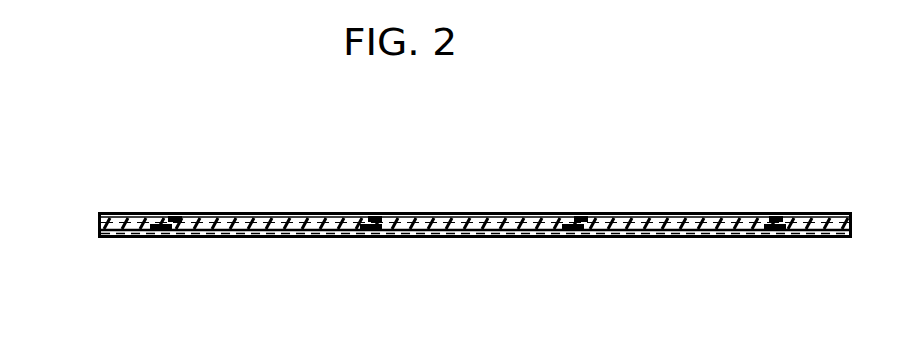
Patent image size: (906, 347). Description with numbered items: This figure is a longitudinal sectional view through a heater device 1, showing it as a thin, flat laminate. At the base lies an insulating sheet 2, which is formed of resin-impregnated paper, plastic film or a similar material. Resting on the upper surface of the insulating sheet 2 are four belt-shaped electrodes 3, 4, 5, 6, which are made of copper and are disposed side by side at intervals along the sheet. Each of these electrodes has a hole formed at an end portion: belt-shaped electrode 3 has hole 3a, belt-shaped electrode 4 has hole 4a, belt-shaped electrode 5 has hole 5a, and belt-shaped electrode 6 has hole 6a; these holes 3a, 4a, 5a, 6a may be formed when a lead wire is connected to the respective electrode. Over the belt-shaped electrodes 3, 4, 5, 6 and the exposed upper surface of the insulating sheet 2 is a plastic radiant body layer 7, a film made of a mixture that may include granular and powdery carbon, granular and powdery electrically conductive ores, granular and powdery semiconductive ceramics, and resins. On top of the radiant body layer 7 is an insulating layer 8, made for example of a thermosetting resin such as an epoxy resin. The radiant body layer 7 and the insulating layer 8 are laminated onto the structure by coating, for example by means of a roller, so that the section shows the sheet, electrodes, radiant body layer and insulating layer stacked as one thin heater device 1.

The heater device 1 is at (93, 252).
The insulating sheet 2 is at (263, 237).
The belt-shaped electrode 3 is at (159, 237).
The hole 3a is at (174, 212).
The belt-shaped electrode 4 is at (368, 237).
The hole 4a is at (376, 212).
The belt-shaped electrode 5 is at (570, 237).
The hole 5a is at (581, 212).
The belt-shaped electrode 6 is at (770, 237).
The hole 6a is at (776, 212).
The plastic radiant body layer 7 is at (229, 212).
The insulating layer 8 is at (440, 212).